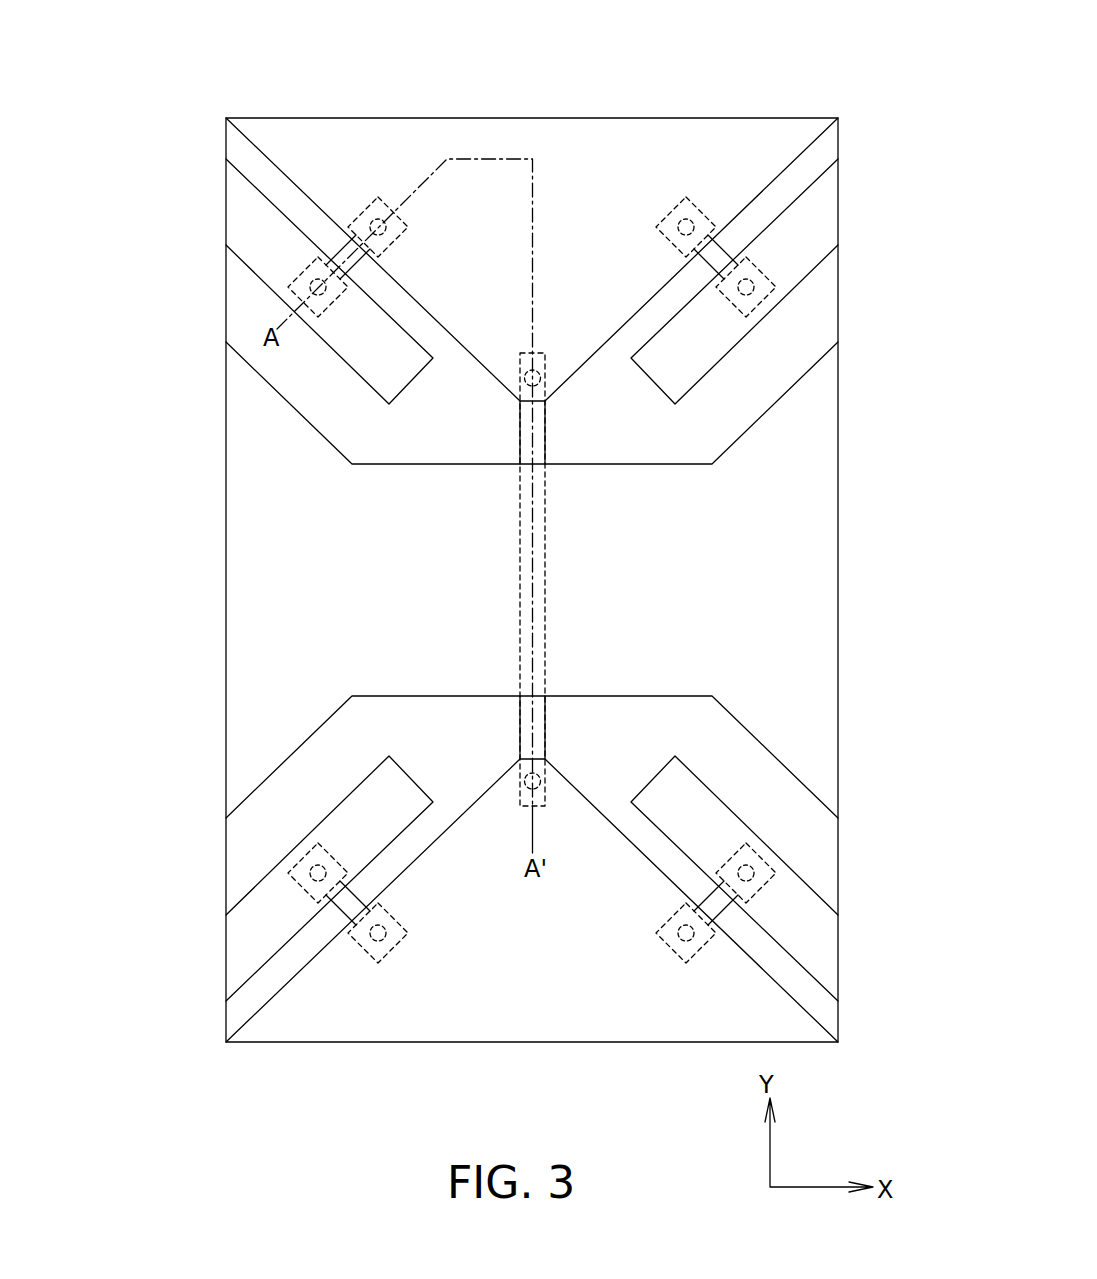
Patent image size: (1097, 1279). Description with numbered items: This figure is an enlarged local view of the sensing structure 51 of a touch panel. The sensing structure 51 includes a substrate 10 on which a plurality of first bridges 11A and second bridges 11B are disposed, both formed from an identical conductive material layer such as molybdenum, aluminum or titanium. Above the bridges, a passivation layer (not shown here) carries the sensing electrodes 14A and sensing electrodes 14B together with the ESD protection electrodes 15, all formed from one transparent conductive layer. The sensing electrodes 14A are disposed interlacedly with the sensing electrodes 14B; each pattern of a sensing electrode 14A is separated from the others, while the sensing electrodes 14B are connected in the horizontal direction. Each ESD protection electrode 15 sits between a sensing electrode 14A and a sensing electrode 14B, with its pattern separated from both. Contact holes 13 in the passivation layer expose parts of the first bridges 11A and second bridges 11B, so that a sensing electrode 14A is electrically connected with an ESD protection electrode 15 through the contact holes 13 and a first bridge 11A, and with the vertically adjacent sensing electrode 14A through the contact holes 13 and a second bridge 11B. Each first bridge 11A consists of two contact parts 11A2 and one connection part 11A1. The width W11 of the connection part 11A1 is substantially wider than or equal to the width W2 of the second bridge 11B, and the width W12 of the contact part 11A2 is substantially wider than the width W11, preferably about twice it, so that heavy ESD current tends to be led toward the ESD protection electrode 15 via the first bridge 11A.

The substrate 10 is at (838, 438).
The first bridge 11A is at (137, 284).
The connection part 11A1 is at (352, 250).
The contact part 11A2 is at (370, 210).
The second bridge 11B is at (522, 663).
The contact hole 13 is at (688, 224).
The sensing electrode 14A is at (593, 255).
The sensing electrode 14B is at (343, 603).
The ESD protection electrode 15 is at (402, 374).
The sensing structure 51 is at (814, 67).
The width of the second bridge W2 is at (475, 593).
The width of the connection part W11 is at (733, 233).
The width of the contact part W12 is at (610, 247).